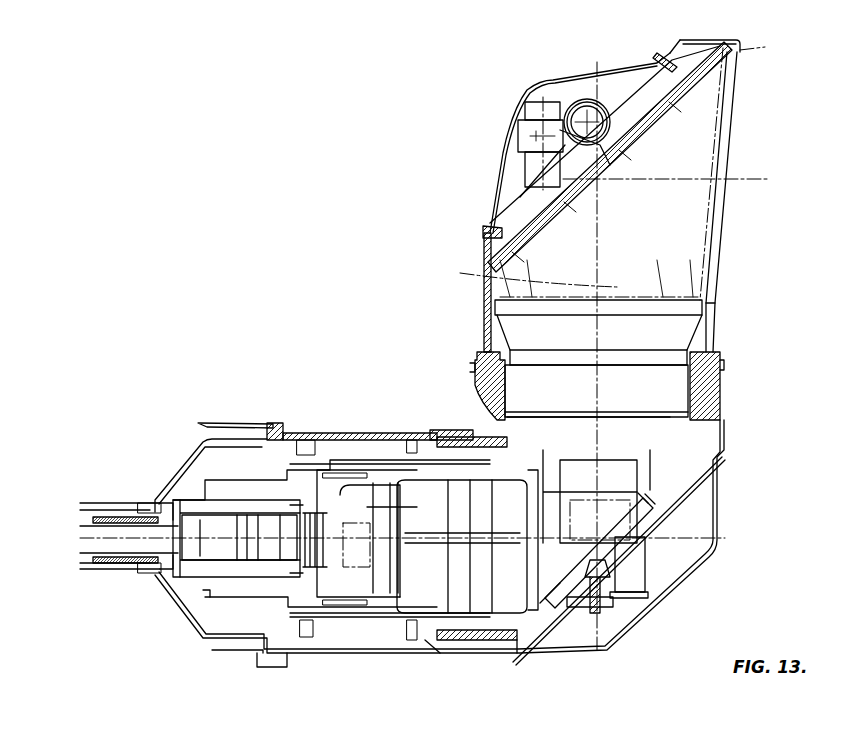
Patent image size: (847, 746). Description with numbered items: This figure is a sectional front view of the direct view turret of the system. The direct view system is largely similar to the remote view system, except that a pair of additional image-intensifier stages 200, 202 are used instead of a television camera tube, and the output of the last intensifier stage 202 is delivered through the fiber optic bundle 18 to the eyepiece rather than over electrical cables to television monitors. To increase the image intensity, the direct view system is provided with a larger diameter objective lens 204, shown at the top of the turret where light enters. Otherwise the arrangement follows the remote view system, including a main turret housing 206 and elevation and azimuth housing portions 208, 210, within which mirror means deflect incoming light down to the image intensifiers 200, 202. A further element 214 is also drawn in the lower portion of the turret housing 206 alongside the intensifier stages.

The fiber optic bundle 18 is at (107, 517).
The image-intensifier stage 200 is at (268, 560).
The image-intensifier stage 202 is at (203, 563).
The objective lens 204 is at (617, 287).
The main turret housing 206 is at (343, 435).
The elevation housing portion 208 is at (708, 335).
The azimuth housing portion 210 is at (483, 270).
The diagonal cylinder 214 is at (627, 520).